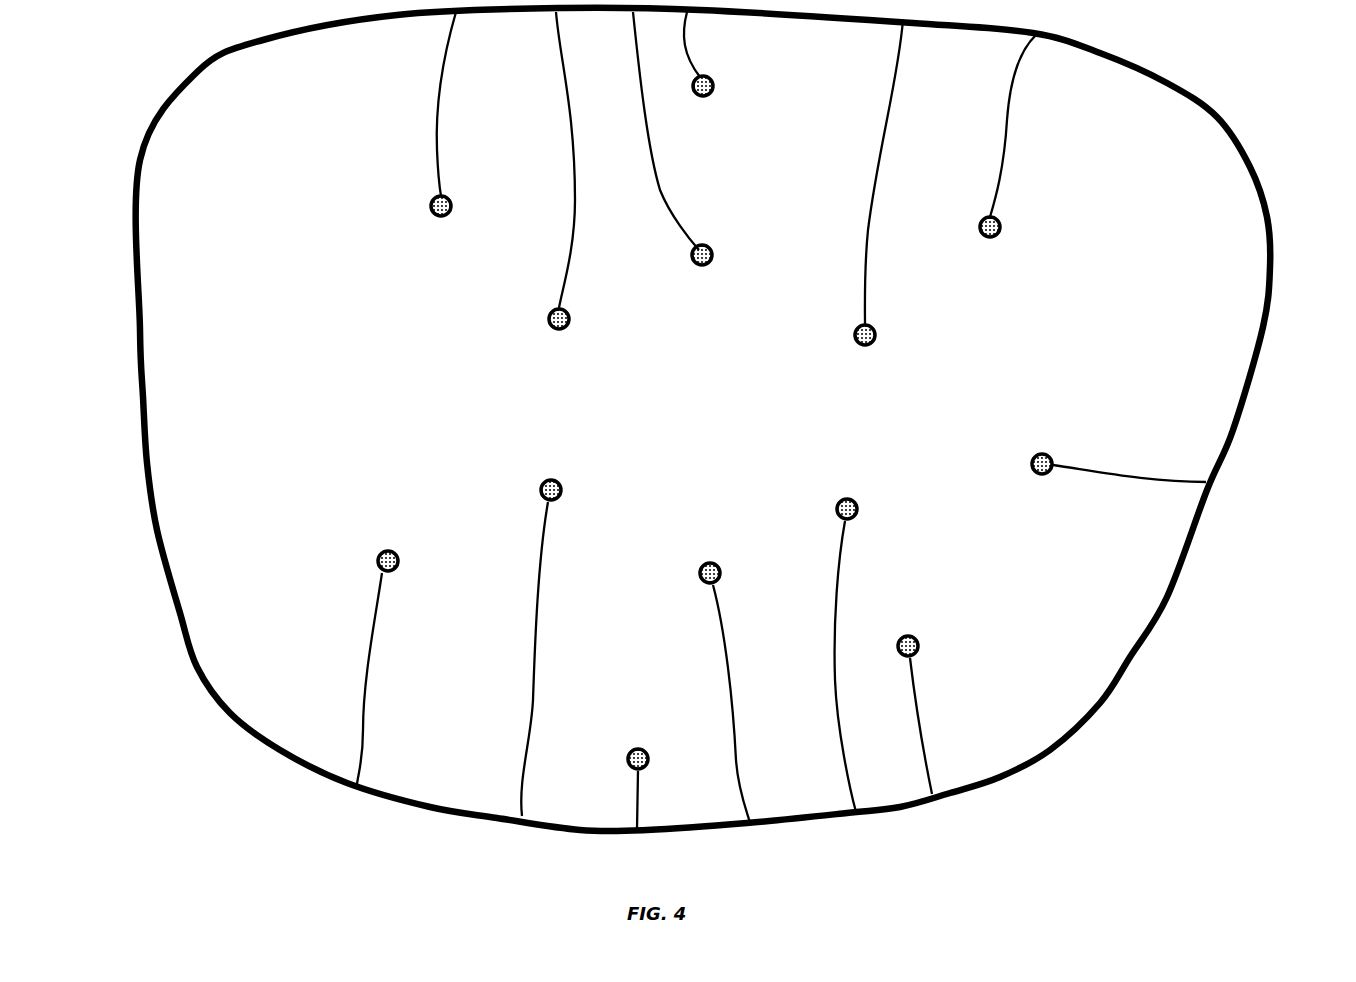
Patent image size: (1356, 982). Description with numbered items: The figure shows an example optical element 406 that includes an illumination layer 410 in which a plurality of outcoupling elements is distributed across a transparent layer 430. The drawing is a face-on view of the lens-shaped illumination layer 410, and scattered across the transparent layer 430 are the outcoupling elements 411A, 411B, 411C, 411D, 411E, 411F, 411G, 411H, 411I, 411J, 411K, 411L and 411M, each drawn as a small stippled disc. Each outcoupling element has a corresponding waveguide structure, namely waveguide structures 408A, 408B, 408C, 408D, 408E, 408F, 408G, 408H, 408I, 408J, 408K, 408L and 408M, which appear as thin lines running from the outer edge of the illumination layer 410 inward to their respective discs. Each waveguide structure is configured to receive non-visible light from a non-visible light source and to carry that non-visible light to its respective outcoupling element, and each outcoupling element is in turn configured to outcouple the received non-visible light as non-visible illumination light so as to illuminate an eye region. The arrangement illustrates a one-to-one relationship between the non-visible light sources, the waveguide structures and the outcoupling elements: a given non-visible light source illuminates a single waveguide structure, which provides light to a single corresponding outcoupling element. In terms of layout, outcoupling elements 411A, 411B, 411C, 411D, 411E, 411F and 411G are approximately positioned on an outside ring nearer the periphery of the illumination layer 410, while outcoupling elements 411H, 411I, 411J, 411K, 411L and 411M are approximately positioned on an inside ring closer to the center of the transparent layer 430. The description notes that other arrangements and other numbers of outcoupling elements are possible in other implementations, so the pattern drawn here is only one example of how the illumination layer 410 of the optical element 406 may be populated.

The optical element 406 is at (1346, 83).
The illumination layer 410 is at (148, 113).
The transparent layer 430 is at (309, 431).
The waveguide structure 408A is at (437, 163).
The waveguide structure 408B is at (690, 58).
The waveguide structure 408C is at (1004, 150).
The waveguide structure 408D is at (1127, 475).
The waveguide structure 408E is at (920, 722).
The waveguide structure 408F is at (640, 813).
The waveguide structure 408G is at (368, 665).
The waveguide structure 408H is at (572, 258).
The waveguide structure 408I is at (661, 173).
The waveguide structure 408J is at (864, 305).
The waveguide structure 408K is at (835, 663).
The waveguide structure 408L is at (727, 645).
The waveguide structure 408M is at (535, 625).
The outcoupling element 411A is at (430, 207).
The outcoupling element 411B is at (716, 85).
The outcoupling element 411C is at (1002, 228).
The outcoupling element 411D is at (1053, 457).
The outcoupling element 411E is at (920, 642).
The outcoupling element 411F is at (646, 747).
The outcoupling element 411G is at (398, 550).
The outcoupling element 411H is at (548, 320).
The outcoupling element 411I is at (690, 260).
The outcoupling element 411J is at (854, 335).
The outcoupling element 411K is at (835, 510).
The outcoupling element 411L is at (698, 577).
The outcoupling element 411M is at (540, 490).